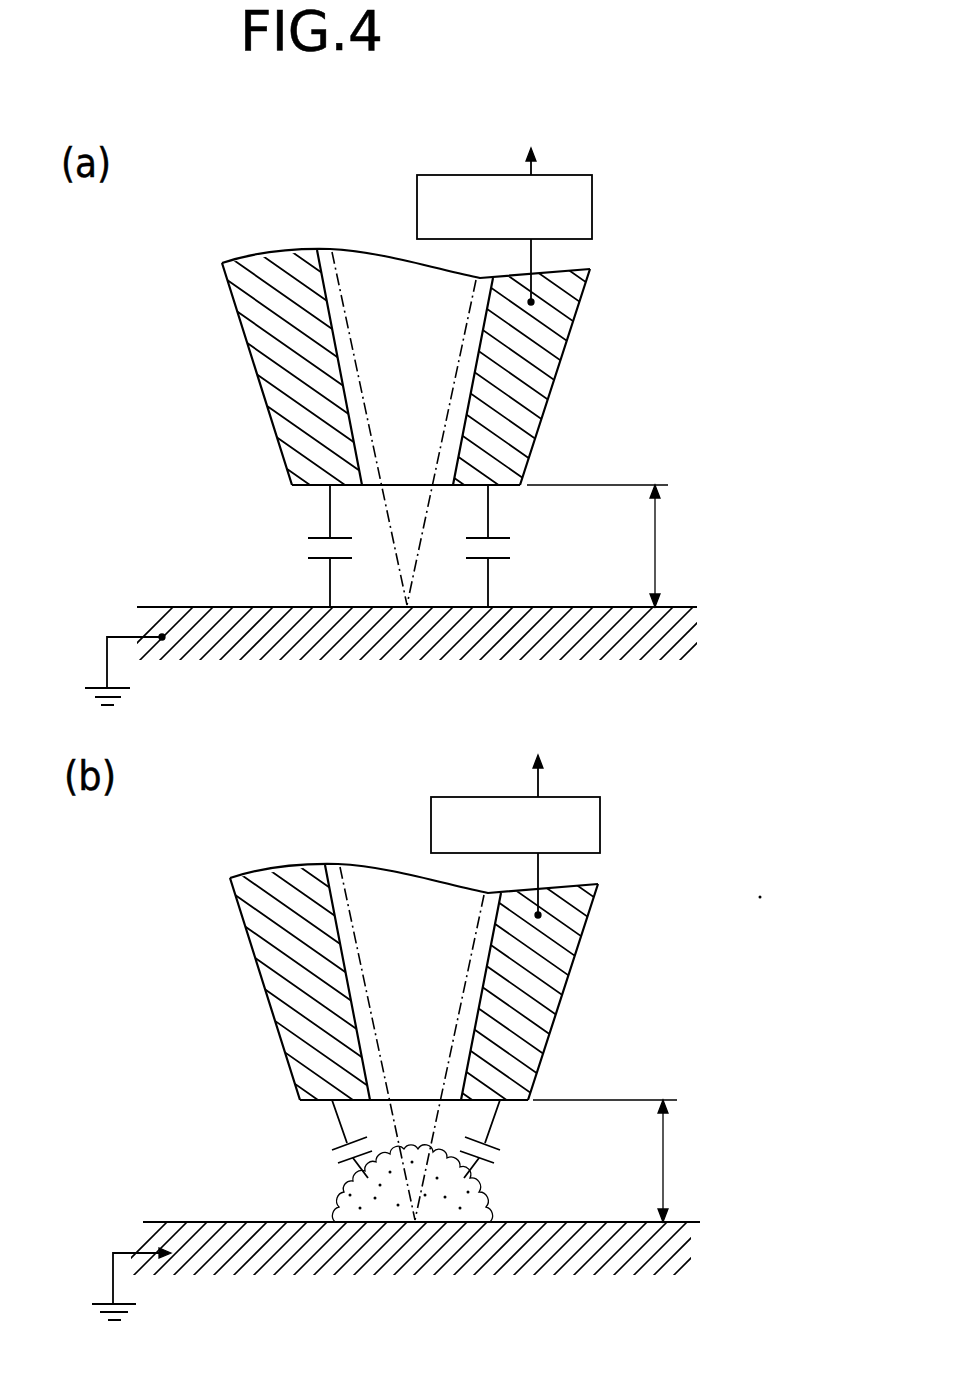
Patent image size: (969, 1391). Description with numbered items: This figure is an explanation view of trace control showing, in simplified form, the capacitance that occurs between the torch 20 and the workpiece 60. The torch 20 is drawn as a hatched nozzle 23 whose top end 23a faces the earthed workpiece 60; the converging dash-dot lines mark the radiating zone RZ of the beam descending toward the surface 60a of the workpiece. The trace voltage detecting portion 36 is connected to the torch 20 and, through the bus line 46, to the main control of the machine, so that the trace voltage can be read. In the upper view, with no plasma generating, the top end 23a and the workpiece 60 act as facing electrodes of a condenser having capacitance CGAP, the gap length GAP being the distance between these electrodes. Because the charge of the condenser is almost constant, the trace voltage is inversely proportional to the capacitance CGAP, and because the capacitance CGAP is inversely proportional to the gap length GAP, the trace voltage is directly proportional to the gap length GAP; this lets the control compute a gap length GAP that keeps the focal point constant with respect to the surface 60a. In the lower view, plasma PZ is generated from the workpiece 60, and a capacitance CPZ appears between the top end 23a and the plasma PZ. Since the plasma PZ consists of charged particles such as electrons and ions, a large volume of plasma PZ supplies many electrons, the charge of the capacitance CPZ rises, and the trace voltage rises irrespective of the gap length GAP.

The torch 20 is at (400, 222).
The nozzle of the torch 23 is at (243, 331).
The top end of the torch 23a is at (310, 486).
The trace voltage detecting portion 36 is at (592, 207).
The bus line 46 is at (533, 459).
The workpiece 60 is at (162, 607).
The surface of the workpiece 60a is at (178, 607).
The laser beam radiating zone RZ is at (331, 250).
The capacitance between torch top end and workpiece CGAP is at (543, 560).
The capacitance between torch top end and plasma CPZ is at (533, 1172).
The plasma PZ is at (486, 1190).
The gap length GAP is at (602, 853).